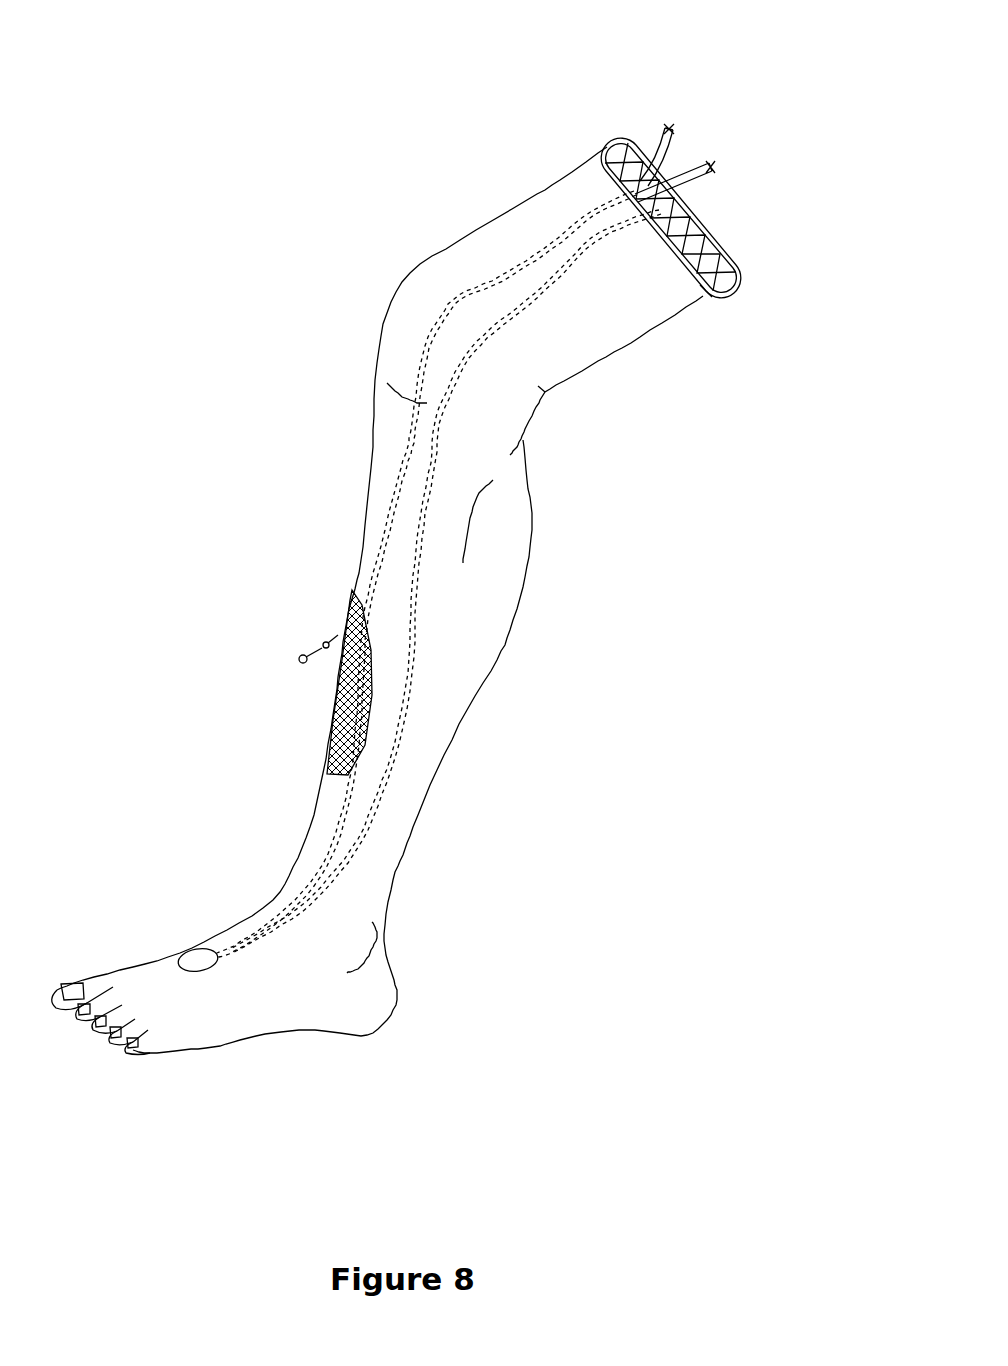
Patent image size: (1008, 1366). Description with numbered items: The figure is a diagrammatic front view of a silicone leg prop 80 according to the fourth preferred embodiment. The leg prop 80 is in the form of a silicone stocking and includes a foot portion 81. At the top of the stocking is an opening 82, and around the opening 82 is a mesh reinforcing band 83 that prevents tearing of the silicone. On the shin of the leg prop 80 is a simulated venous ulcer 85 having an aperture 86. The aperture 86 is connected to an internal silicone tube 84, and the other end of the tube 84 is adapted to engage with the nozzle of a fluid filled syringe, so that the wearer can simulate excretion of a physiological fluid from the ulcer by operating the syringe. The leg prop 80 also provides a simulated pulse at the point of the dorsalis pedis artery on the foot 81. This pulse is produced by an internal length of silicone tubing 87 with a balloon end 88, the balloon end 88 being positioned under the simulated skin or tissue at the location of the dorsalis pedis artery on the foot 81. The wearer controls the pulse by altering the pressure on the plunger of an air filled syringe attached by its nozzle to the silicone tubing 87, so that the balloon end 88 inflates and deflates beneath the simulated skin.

The leg prop 80 is at (567, 911).
The foot portion 81 is at (205, 1028).
The opening 82 is at (727, 247).
The mesh reinforcing band 83 is at (707, 297).
The internal silicone tube 84 is at (668, 128).
The simulated venous ulcer 85 is at (333, 722).
The aperture 86 is at (340, 630).
The silicone tubing 87 is at (712, 167).
The balloon end 88 is at (205, 958).